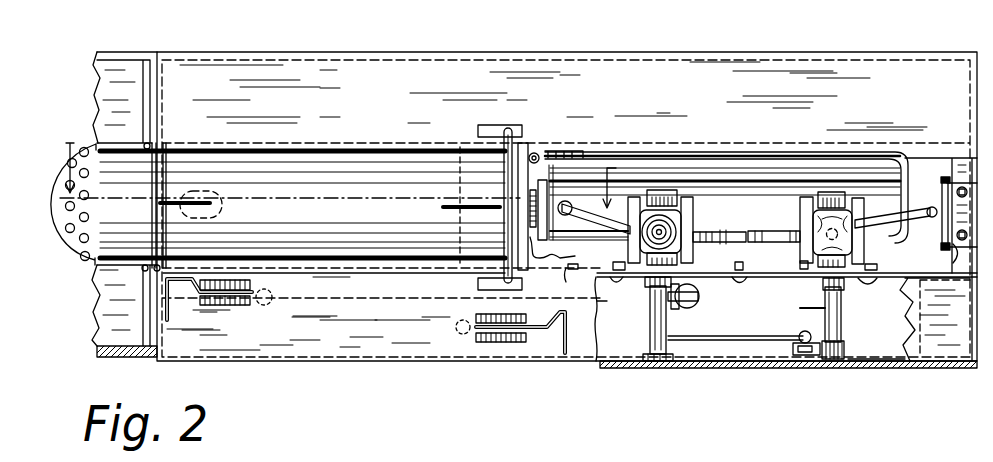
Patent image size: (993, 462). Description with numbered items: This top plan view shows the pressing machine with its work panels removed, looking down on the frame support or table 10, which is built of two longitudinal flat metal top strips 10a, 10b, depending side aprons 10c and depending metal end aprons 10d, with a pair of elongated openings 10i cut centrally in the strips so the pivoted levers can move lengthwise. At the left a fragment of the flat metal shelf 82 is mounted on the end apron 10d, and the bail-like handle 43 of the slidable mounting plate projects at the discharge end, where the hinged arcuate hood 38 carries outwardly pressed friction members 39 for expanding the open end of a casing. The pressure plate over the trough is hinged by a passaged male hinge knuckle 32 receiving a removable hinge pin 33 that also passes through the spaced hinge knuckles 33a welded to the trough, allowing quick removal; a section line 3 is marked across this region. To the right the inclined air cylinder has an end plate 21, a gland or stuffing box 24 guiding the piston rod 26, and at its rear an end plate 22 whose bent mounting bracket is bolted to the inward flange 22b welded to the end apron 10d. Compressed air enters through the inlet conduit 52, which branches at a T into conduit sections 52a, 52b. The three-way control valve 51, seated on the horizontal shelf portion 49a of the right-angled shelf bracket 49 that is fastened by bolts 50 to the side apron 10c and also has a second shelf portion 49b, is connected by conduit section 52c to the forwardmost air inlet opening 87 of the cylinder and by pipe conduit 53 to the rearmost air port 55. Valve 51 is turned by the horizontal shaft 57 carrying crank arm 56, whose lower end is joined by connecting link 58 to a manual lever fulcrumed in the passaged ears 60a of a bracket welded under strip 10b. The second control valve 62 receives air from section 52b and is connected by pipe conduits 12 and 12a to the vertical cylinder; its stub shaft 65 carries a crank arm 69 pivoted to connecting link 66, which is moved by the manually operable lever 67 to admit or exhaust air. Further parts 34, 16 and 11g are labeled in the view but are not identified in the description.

The frame support or table 10 is at (625, 368).
The longitudinal flat metal top strip 10a is at (698, 77).
The longitudinal flat metal top strip 10b is at (217, 358).
The depending side apron 10c is at (860, 370).
The depending metal end apron 10d is at (968, 370).
The elongated openings 10i is at (483, 125).
The flat metal shelf 82 is at (102, 63).
The bail-like handle 43 is at (138, 351).
The hood 38 is at (86, 272).
The friction members 39 is at (86, 257).
The section line 3- 3 is at (338, 173).
The male hinge knuckle 32 is at (138, 266).
The hinge pin 33 is at (153, 268).
The hinge knuckles 33a is at (143, 268).
The key pin 34 is at (180, 202).
The bearing plate 16 is at (508, 132).
The pipe conduit 12 is at (528, 145).
The end plate 21 is at (537, 151).
The top rail bracket 11g is at (572, 148).
The air conduit 12a is at (883, 157).
The conduit section 52c is at (592, 200).
The control valve 51 is at (675, 200).
The control valve 62 is at (817, 200).
The gland or stuffing box 24 is at (564, 217).
The conduit section 52a is at (740, 250).
The conduit section 52b is at (803, 252).
The air inlet conduit 52 is at (756, 270).
The pipe conduit 53 is at (881, 218).
The end plate 22 is at (943, 247).
The inward extension or flange 22b is at (958, 262).
The rearmost air port 55 is at (941, 259).
The crank arm 56 is at (699, 293).
The valve operating shaft 57 is at (667, 323).
The shelf bracket 49 is at (852, 279).
The horizontal shelf portion 49a is at (648, 282).
The horizontal shelf portion 49b is at (823, 285).
The bolts 50 is at (868, 281).
The stub shaft 65 is at (800, 308).
The connecting link 66 is at (747, 341).
The crank arm 69 is at (792, 349).
The connecting link 58 is at (605, 301).
The passaged ears 60a is at (248, 305).
The piston rod 26 is at (517, 340).
The manually operable lever 67 is at (558, 348).
The forwardmost air inlet opening 87 is at (566, 282).